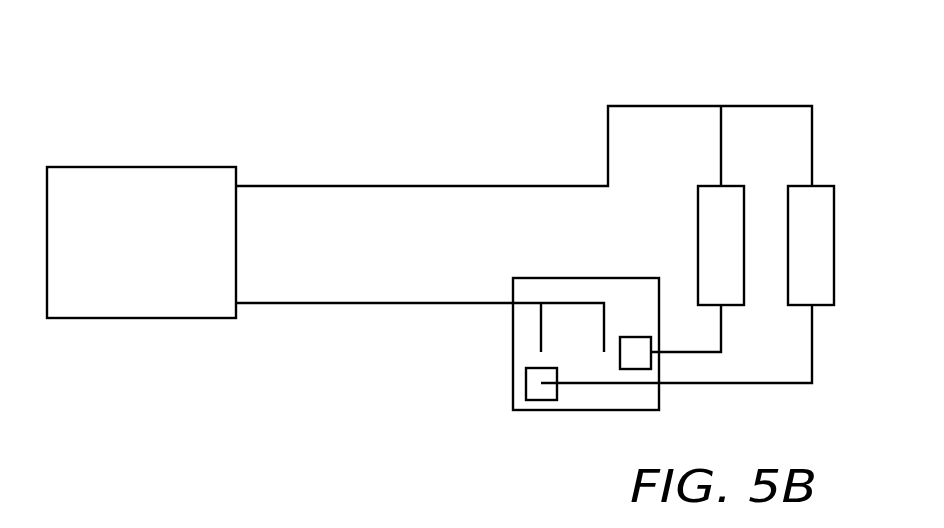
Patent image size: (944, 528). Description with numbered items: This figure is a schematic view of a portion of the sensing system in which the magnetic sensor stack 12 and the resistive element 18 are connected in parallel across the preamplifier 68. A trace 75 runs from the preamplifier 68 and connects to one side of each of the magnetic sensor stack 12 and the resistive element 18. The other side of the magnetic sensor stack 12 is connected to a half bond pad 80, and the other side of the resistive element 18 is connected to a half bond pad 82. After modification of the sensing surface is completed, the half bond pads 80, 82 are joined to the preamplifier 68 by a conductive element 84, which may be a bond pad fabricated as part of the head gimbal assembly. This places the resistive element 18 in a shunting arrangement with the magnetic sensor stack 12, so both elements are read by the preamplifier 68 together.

The preamplifier 68 is at (138, 167).
The trace 75 is at (647, 106).
The resistive element 18 is at (698, 240).
The magnetic sensor stack 12 is at (834, 238).
The conductive element 84 is at (513, 342).
The half bond pad 82 is at (620, 361).
The half bond pad 80 is at (526, 385).